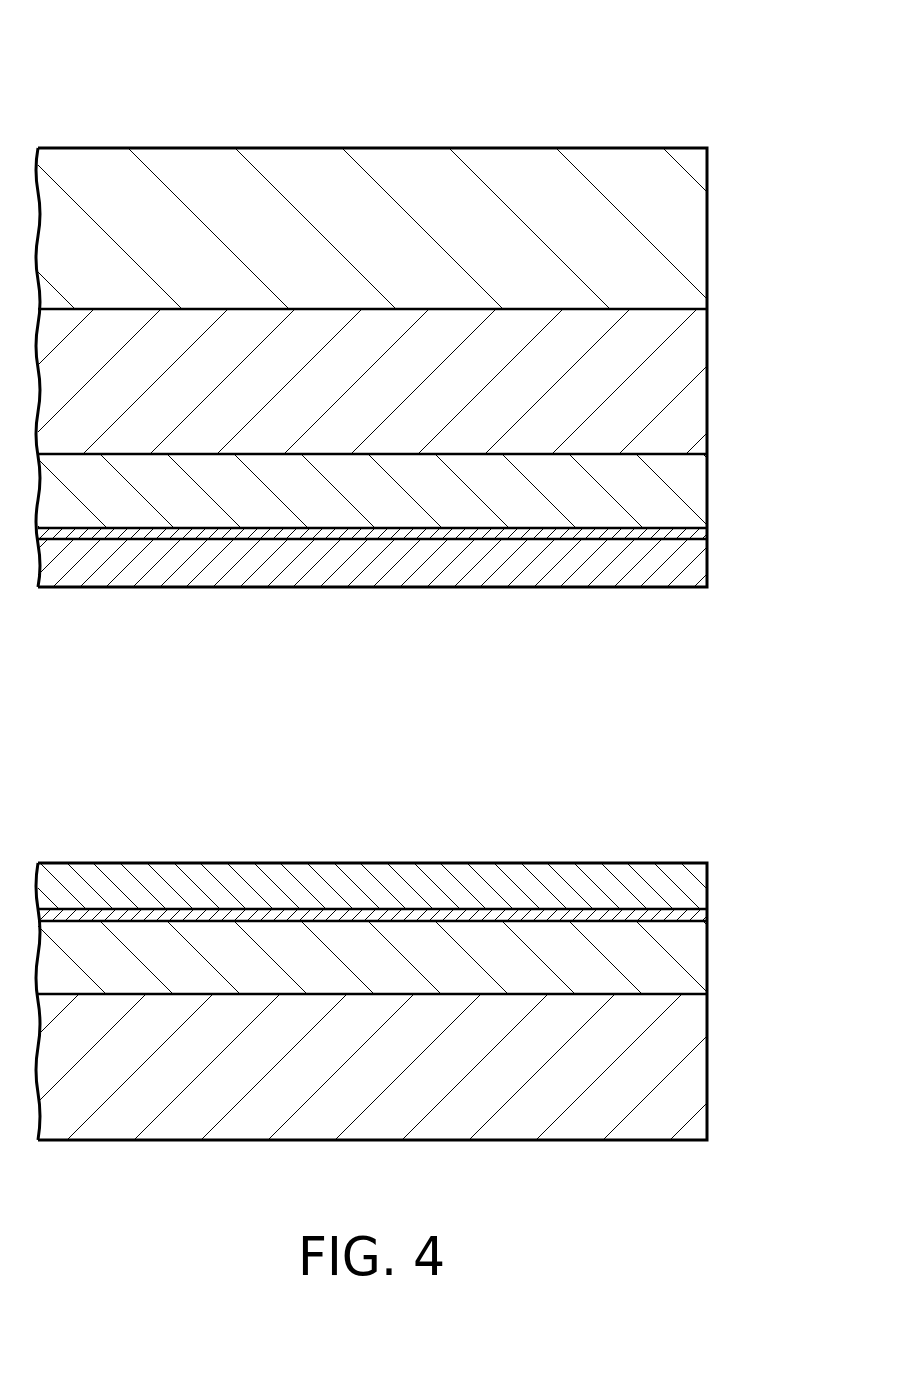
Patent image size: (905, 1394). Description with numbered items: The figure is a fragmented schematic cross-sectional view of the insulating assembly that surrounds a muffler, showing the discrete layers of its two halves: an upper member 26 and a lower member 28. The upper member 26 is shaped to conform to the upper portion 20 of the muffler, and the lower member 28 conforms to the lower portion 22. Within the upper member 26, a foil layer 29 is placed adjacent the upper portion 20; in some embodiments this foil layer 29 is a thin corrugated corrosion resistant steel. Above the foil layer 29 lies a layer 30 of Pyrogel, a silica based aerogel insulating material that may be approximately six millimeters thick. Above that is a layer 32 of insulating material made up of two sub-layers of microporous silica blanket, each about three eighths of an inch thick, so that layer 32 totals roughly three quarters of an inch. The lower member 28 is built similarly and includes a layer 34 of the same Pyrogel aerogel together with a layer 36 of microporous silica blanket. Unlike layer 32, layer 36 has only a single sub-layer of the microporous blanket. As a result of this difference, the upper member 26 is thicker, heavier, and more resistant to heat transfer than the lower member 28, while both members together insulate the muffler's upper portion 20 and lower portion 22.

The upper portion 20 is at (708, 573).
The lower portion 22 is at (708, 884).
The upper member 26 is at (420, 303).
The lower member 28 is at (418, 1073).
The foil layer 29 is at (708, 533).
The layer of Pyrogel 6350 30 is at (710, 455).
The layer of insulating material 32 is at (710, 148).
The layer of Pyrogel 6350 34 is at (710, 921).
The layer of microporous silica blanket 36 is at (710, 994).